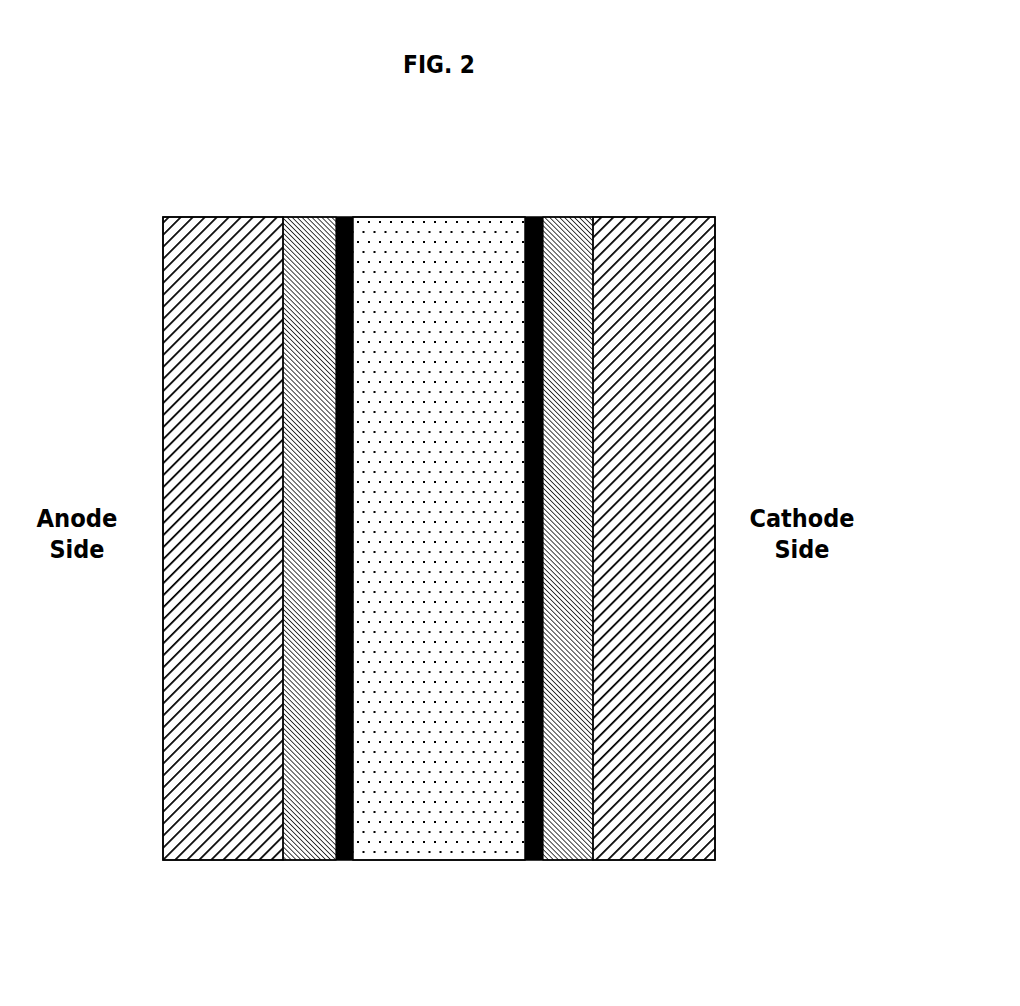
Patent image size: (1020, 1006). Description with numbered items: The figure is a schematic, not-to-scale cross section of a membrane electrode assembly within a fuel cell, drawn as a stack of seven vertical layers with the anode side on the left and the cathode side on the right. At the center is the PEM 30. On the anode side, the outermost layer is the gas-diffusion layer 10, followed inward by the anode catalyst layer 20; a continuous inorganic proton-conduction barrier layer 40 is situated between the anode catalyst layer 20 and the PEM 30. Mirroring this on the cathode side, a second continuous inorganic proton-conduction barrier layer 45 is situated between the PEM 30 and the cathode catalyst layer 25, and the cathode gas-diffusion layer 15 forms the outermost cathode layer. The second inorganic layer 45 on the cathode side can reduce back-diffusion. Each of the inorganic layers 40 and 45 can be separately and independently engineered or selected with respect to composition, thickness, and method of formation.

The gas-diffusion layer 10 is at (215, 860).
The anode catalyst layer 20 is at (302, 860).
The continuous inorganic proton-conduction barrier layer 40 is at (345, 217).
The PEM 30 is at (442, 860).
The second continuous inorganic proton-conduction barrier layer 45 is at (532, 217).
The cathode catalyst layer 25 is at (578, 860).
The gas-diffusion layer 15 is at (645, 860).